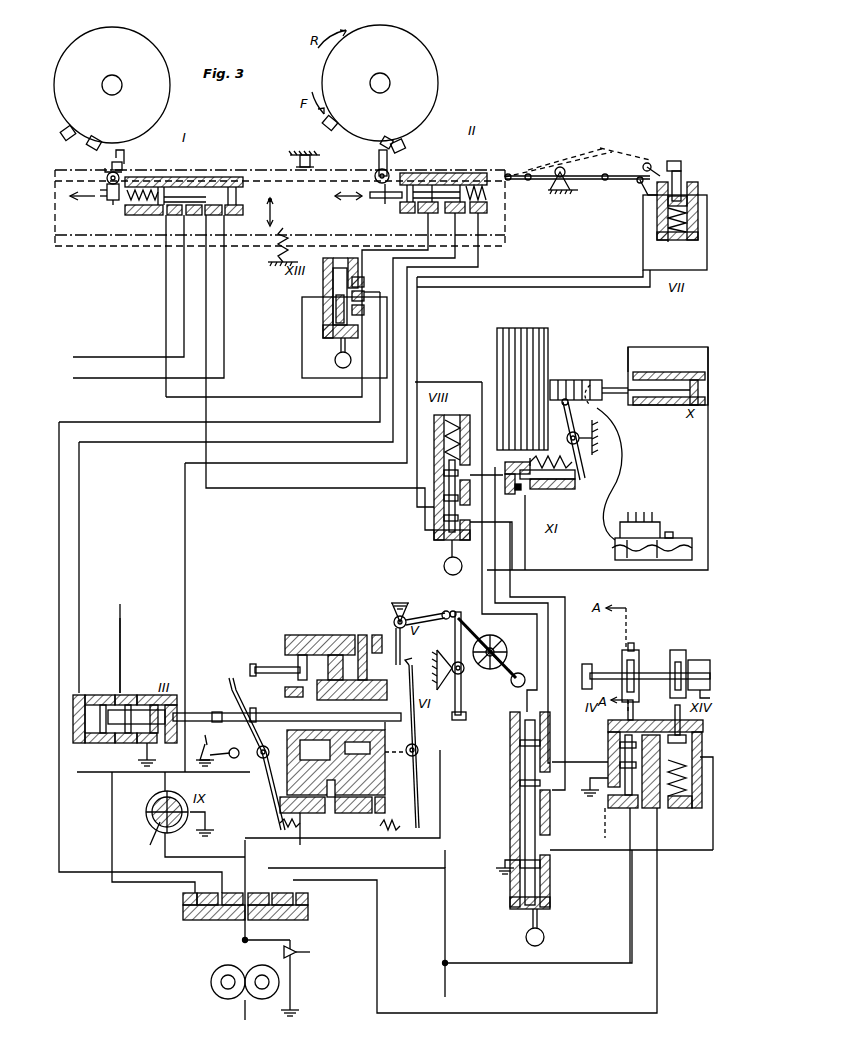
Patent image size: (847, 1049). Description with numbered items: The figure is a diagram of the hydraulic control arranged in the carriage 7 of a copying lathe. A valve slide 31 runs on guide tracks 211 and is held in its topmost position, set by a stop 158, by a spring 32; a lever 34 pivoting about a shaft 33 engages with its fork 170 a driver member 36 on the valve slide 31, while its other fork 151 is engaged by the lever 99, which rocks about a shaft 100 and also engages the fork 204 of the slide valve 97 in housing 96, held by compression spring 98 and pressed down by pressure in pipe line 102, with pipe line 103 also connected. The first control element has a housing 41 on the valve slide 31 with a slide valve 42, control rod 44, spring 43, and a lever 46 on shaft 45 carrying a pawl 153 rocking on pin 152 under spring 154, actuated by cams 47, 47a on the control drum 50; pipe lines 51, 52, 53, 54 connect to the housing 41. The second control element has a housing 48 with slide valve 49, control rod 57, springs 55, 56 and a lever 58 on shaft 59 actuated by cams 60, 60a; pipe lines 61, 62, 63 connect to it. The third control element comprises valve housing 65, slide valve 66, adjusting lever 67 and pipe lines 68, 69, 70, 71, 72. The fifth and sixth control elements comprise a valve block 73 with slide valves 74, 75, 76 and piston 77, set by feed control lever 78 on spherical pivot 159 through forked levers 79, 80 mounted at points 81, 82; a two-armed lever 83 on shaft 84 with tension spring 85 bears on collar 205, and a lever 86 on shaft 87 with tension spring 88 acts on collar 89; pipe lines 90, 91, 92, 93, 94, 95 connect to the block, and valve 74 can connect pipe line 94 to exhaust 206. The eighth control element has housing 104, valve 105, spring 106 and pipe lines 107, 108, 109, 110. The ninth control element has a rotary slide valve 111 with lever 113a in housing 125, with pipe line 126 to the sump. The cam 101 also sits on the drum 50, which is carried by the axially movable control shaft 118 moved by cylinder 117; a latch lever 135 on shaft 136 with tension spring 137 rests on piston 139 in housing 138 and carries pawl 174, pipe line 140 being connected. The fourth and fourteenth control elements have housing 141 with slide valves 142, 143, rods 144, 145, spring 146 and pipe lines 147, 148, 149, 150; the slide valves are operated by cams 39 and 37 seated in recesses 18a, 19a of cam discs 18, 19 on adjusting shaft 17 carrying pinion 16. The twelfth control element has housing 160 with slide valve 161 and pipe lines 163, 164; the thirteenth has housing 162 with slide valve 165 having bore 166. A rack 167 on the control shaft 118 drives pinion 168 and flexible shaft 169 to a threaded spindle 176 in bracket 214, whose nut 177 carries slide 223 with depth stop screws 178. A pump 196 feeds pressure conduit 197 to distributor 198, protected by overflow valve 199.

The carriage 7 is at (290, 155).
The pinion 16 is at (586, 664).
The adjusting shaft 17 is at (608, 672).
The cam disc 18 is at (636, 655).
The recess 18a is at (630, 650).
The cam disc 19 is at (680, 650).
The recess 19a is at (688, 670).
The valve slide 31 is at (250, 228).
The spring 32 is at (276, 258).
The shaft 33 is at (577, 157).
The lever 34 is at (562, 166).
The driver member 36 is at (510, 172).
The cam 37 is at (708, 699).
The cam 39 is at (636, 682).
The housing 41 is at (228, 177).
The slide valve 42 is at (200, 177).
The spring 43 is at (146, 216).
The control rod 44 is at (116, 200).
The shaft 45 is at (108, 188).
The lever 46 is at (111, 200).
The cam 47 is at (102, 148).
The cam 47a is at (60, 129).
The housing 48 is at (478, 173).
The slide valve 49 is at (447, 173).
The control drum 50 is at (166, 95).
The pipe line 51 is at (279, 440).
The pipe line 52 is at (271, 426).
The pipe line 53 is at (158, 296).
The pipe line 54 is at (137, 278).
The compression spring 55 is at (492, 176).
The compression spring 56 is at (405, 213).
The control rod 57 is at (387, 201).
The lever 58 is at (384, 200).
The shaft 59 is at (377, 170).
The cam 60 is at (322, 128).
The cam 60a is at (377, 134).
The pipe line 61 is at (302, 299).
The pipe line 62 is at (272, 553).
The pipe line 63 is at (178, 610).
The valve housing 65 is at (90, 745).
The slide valve 66 is at (135, 698).
The adjusting lever 67 is at (217, 750).
The pipe line 68 is at (90, 695).
The pipe line 69 is at (118, 647).
The pipe line 70 is at (169, 805).
The pipe line 71 is at (168, 731).
The pipe line 72 is at (136, 731).
The valve block 73 is at (290, 640).
The slide valve 74 is at (268, 668).
The slide valve 75 is at (282, 714).
The control slide valve 76 is at (386, 768).
The valve piston 77 is at (278, 805).
The feed control lever 78 is at (480, 640).
The forked lever 79 is at (432, 614).
The forked lever 80 is at (455, 660).
The mounting point 81 is at (406, 617).
The mounting point 82 is at (456, 676).
The two-armed lever 83 is at (253, 746).
The shaft 84 is at (278, 750).
The tension spring 85 is at (342, 800).
The lever 86 is at (418, 798).
The shaft 87 is at (414, 758).
The tension spring 88 is at (392, 815).
The collar 89 is at (428, 728).
The pipe line 90 is at (275, 789).
The pipe line 91 is at (85, 775).
The pipe line 92 is at (400, 809).
The pipe line 93 is at (275, 856).
The pipe line 94 is at (440, 772).
The pipe line 95 is at (397, 795).
The housing 96 is at (690, 242).
The slide valve 97 is at (682, 178).
The compression spring 98 is at (672, 242).
The lever 99 is at (646, 162).
The shaft 100 is at (639, 178).
The cam 101 is at (400, 140).
The pipe line 102 is at (443, 525).
The pipe line 103 is at (698, 212).
The slide valve housing 104 is at (438, 536).
The valve 105 is at (446, 557).
The compression spring 106 is at (452, 418).
The pipe line 107 is at (470, 465).
The pipe line 108 is at (515, 502).
The pipe line 109 is at (385, 687).
The pipe line 110 is at (590, 736).
The rotary slide valve 111 is at (160, 800).
The lever 113a is at (138, 835).
The cylinder 117 is at (676, 372).
The control shaft 118 is at (565, 380).
The housing 125 is at (150, 814).
The pipe line 126 is at (196, 827).
The latch lever 135 is at (580, 450).
The shaft 136 is at (582, 445).
The tension spring 137 is at (560, 490).
The housing 138 is at (545, 490).
The piston 139 is at (572, 482).
The pipe line 140 is at (549, 636).
The housing 141 is at (612, 829).
The slide valve 142 is at (612, 748).
The slide valve 143 is at (700, 734).
The rod 144 is at (632, 720).
The rod 145 is at (667, 720).
The spring 146 is at (696, 808).
The pipe line 147 is at (599, 785).
The pipe line 148 is at (594, 761).
The pipe line 149 is at (552, 860).
The pipe line 150 is at (505, 850).
The fork 151 is at (606, 181).
The pin 152 is at (124, 163).
The pawl 153 is at (125, 152).
The spring 154 is at (108, 166).
The stop 158 is at (312, 158).
The spherical pivot 159 is at (490, 669).
The housing 160 is at (550, 801).
The slide valve 161 is at (545, 812).
The housing 162 is at (338, 338).
The pipe line 163 is at (505, 861).
The pipe line 164 is at (411, 500).
The slide valve 165 is at (333, 320).
The bore 166 is at (335, 268).
The rack 167 is at (592, 380).
The toothed pinion 168 is at (603, 405).
The flexible shaft 169 is at (622, 440).
The fork 170 is at (530, 172).
The pawl 174 is at (562, 397).
The threaded spindle 176 is at (656, 560).
The nut 177 is at (634, 560).
The depth stop screws 178 is at (630, 520).
The pump 196 is at (222, 975).
The pressure conduit 197 is at (242, 926).
The distributor 198 is at (192, 920).
The overflow valve 199 is at (296, 950).
The fork 204 is at (688, 155).
The collar 205 is at (253, 708).
The exhaust 206 is at (356, 677).
The guide tracks 211 is at (60, 230).
The bracket 214 is at (682, 560).
The slide 223 is at (672, 532).